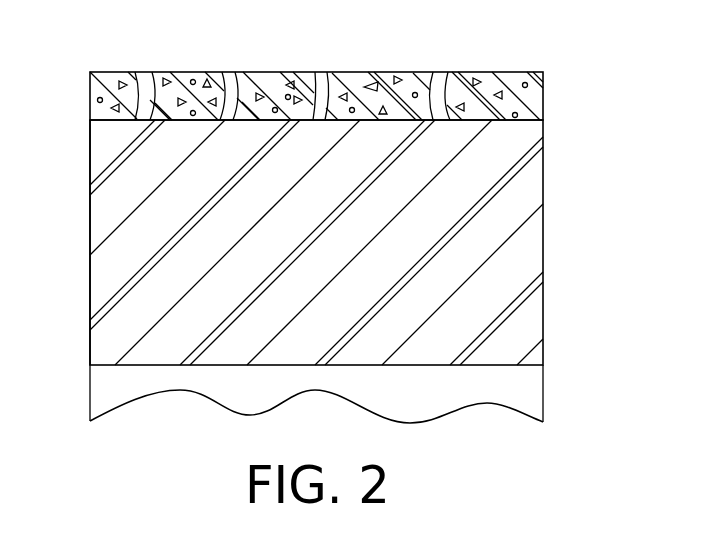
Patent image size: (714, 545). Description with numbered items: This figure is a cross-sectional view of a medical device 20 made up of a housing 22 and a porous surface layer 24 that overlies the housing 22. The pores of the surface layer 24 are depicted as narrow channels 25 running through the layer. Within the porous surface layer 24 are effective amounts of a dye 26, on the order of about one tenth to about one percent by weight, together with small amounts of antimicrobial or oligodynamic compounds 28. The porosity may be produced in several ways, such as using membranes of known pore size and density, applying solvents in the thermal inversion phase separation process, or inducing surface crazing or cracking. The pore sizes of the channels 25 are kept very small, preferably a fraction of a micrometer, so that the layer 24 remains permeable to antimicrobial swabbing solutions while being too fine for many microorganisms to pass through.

The medical device 20 is at (543, 225).
The housing 22 is at (88, 240).
The porous surface layer 24 is at (356, 61).
The narrow channels 25 is at (153, 80).
The dye 26 is at (525, 82).
The antimicrobial or oligodynamic compounds 28 is at (370, 85).